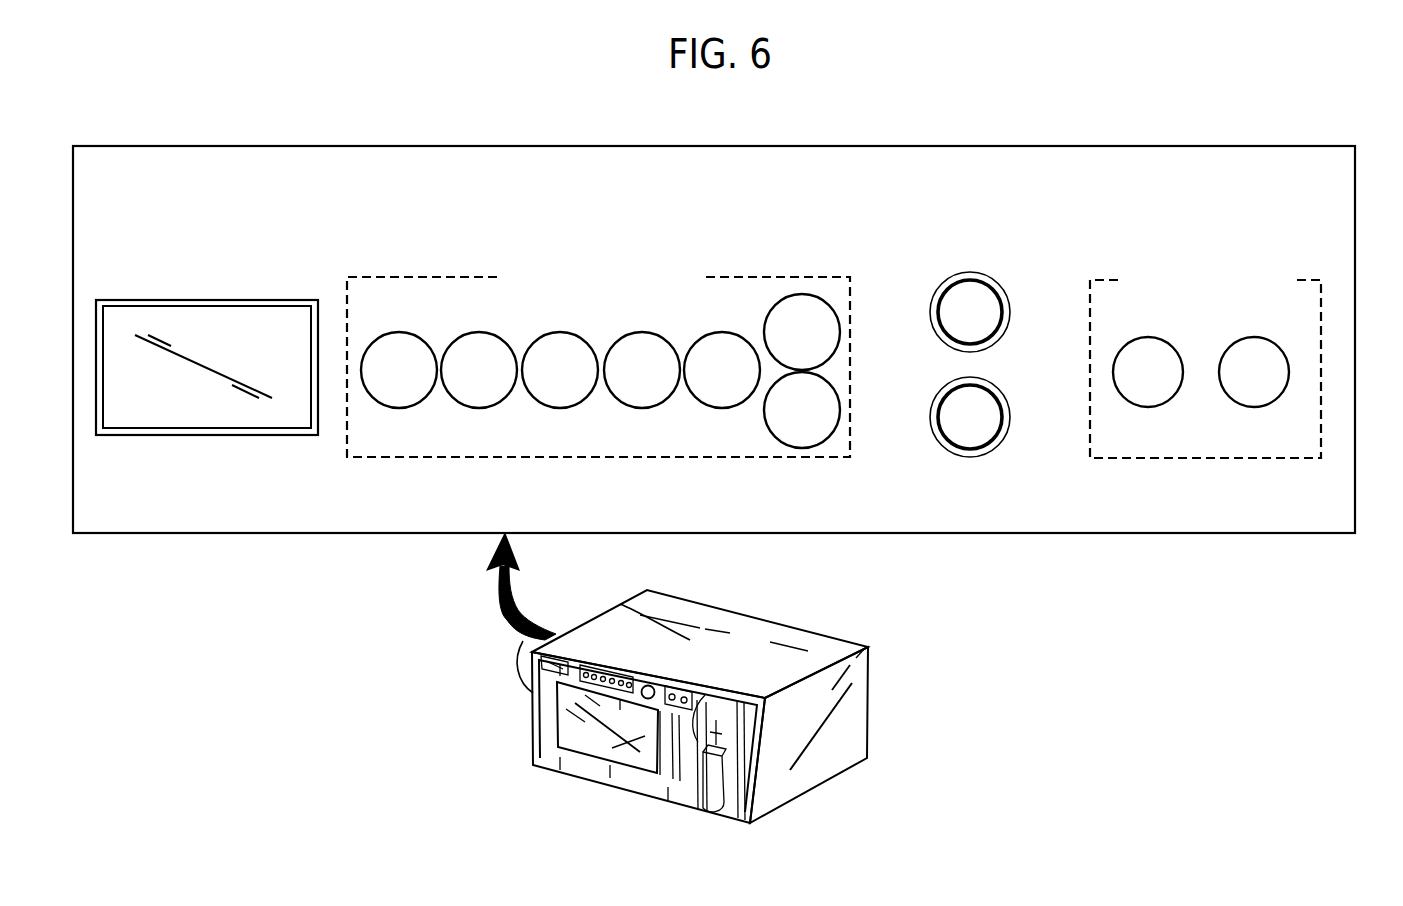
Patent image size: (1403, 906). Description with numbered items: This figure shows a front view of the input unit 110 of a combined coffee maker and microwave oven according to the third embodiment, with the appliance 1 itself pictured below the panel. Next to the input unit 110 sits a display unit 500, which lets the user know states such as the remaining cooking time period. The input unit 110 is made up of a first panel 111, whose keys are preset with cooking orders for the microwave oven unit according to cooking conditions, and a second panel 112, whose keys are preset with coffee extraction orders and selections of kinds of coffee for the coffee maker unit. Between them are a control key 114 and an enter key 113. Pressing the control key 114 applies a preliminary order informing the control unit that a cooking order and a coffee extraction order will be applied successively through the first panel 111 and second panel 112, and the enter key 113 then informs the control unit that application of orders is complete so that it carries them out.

The microwave oven 1 is at (619, 798).
The input unit 110 is at (1300, 260).
The first panel 111 is at (598, 458).
The second panel 112 is at (1205, 458).
The enter key 113 is at (970, 457).
The control key 114 is at (1003, 283).
The display unit 500 is at (208, 292).